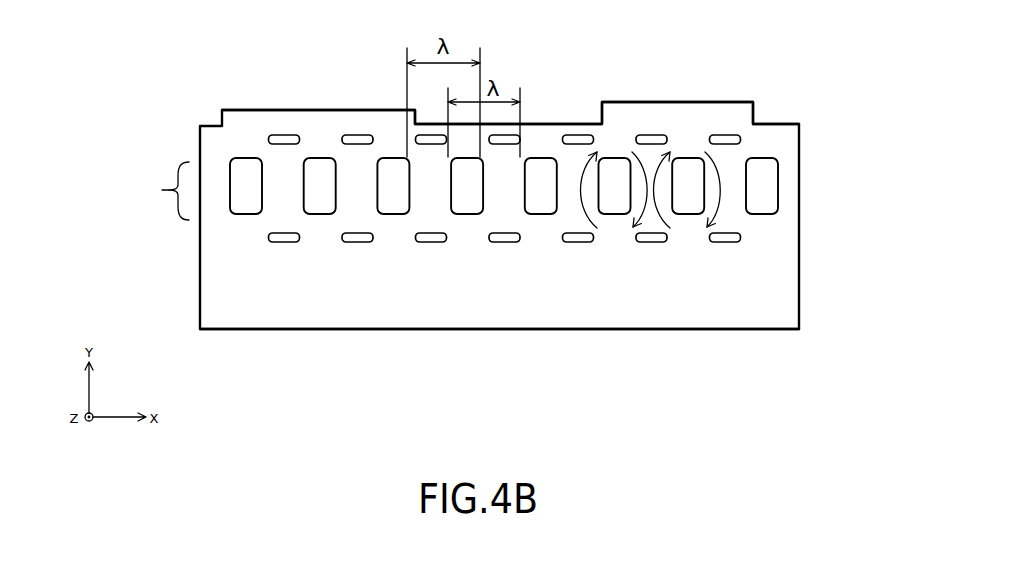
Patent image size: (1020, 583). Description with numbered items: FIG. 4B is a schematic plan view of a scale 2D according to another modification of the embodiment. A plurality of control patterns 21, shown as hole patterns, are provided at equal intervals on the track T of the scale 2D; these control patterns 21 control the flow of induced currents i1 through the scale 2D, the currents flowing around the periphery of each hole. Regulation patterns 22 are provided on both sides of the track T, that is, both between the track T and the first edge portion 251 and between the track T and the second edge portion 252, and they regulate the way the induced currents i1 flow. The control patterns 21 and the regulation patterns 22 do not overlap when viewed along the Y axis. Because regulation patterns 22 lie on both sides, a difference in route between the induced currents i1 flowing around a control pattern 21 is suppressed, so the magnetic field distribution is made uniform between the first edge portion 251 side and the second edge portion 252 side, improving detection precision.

The scale 2D is at (731, 89).
The control pattern 21 is at (240, 178).
The regulation pattern 22 is at (287, 137).
The first edge portion 251 is at (562, 122).
The second edge portion 252 is at (503, 330).
The induced current i1 is at (651, 188).
The track T is at (164, 191).